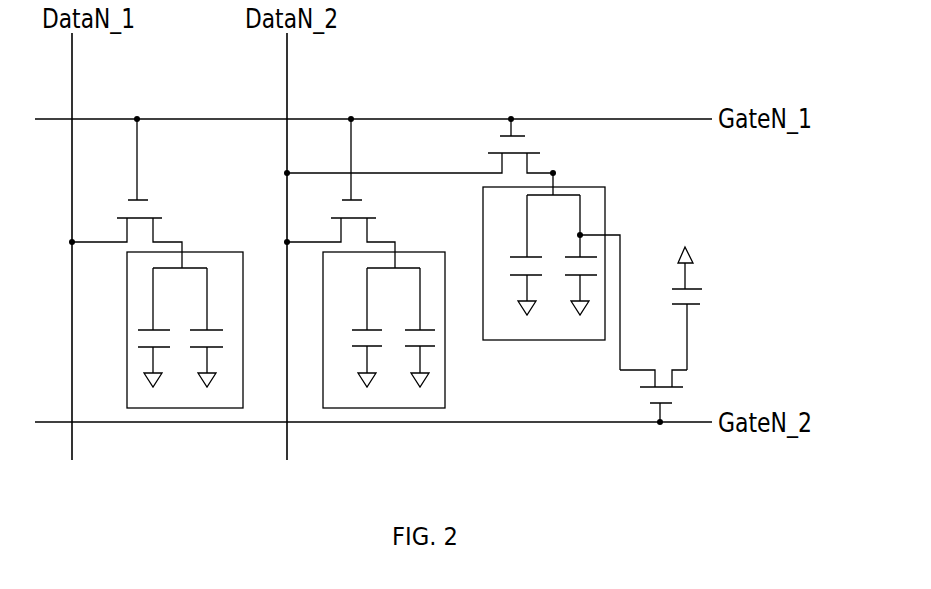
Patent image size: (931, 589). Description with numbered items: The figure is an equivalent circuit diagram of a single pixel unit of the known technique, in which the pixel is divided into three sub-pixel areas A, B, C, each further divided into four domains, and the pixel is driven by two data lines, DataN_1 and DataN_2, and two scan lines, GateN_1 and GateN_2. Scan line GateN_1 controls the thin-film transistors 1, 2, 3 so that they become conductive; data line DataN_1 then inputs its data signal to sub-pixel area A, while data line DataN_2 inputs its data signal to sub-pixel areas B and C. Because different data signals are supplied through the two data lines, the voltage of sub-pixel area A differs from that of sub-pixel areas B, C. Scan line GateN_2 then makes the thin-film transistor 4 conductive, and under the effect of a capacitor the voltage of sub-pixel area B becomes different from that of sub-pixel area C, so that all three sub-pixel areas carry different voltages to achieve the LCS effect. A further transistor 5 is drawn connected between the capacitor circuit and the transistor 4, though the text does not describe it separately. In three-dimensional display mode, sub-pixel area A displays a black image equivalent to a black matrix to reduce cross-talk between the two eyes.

The thin-film transistor 1 is at (158, 214).
The thin-film transistor 2 is at (372, 214).
The thin-film transistor 3 is at (531, 150).
The thin-film transistor 4 is at (688, 387).
The fifth transistor 5 is at (703, 287).
The sub-pixel area A is at (200, 408).
The sub-pixel area B is at (447, 380).
The sub-pixel area C is at (607, 207).